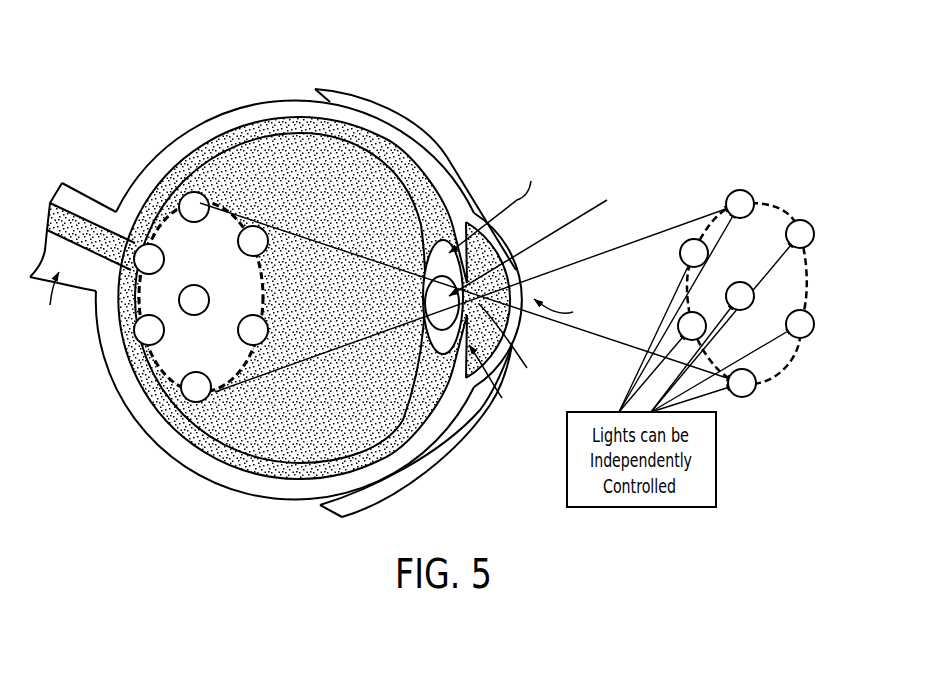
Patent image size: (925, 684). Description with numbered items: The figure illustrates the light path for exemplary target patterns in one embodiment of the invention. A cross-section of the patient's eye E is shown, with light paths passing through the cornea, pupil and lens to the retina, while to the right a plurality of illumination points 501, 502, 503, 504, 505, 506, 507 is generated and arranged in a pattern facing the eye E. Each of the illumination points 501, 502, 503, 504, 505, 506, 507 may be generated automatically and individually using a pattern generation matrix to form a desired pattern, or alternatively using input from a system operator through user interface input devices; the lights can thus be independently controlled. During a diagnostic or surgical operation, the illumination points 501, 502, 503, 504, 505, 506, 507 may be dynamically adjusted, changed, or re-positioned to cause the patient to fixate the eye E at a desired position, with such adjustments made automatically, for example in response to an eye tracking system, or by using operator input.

The eye E is at (364, 70).
The illumination point 501 is at (743, 191).
The illumination point 502 is at (806, 221).
The illumination point 503 is at (815, 329).
The illumination point 504 is at (745, 398).
The illumination point 505 is at (680, 316).
The illumination point 506 is at (694, 239).
The illumination point 507 is at (745, 282).